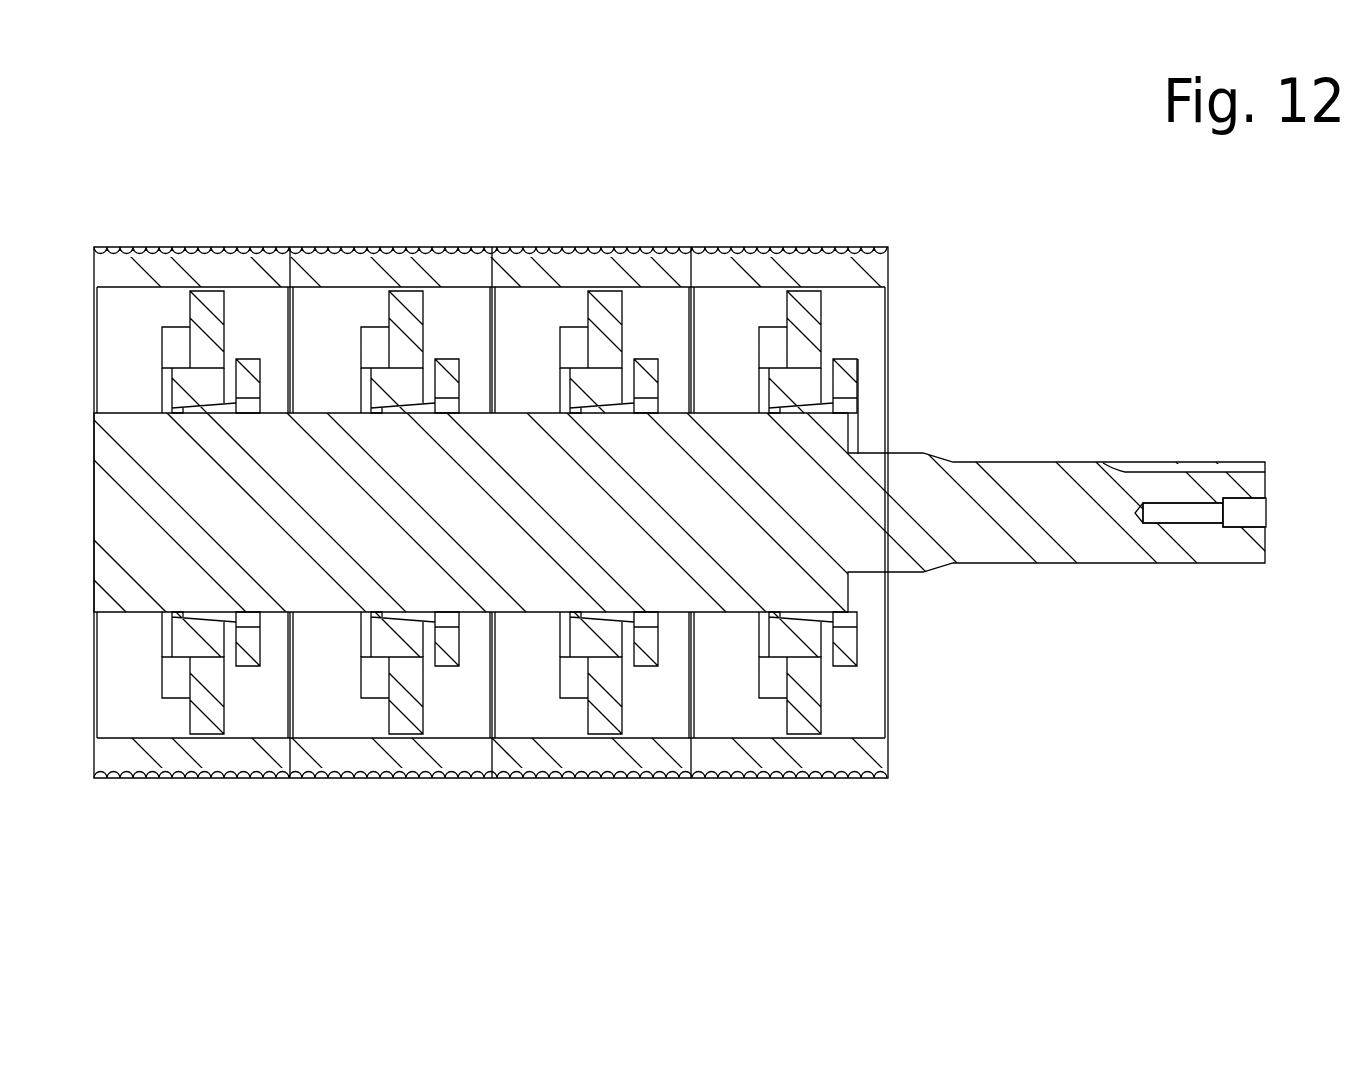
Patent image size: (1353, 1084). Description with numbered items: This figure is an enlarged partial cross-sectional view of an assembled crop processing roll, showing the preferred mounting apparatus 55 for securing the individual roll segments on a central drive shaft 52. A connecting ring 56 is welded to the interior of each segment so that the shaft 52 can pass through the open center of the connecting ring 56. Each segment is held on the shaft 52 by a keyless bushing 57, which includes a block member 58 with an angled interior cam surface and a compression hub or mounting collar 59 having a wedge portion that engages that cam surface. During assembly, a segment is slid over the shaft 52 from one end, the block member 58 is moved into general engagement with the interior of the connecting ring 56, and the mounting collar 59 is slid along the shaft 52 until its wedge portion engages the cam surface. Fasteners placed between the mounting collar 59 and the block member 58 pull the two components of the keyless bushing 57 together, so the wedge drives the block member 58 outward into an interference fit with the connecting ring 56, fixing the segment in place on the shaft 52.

The drive shaft 52 is at (1137, 485).
The mounting apparatus 55 is at (1035, 331).
The connecting ring 56 is at (205, 305).
The keyless bushing 57 is at (896, 610).
The block member 58 is at (205, 385).
The mounting collar 59 is at (258, 360).